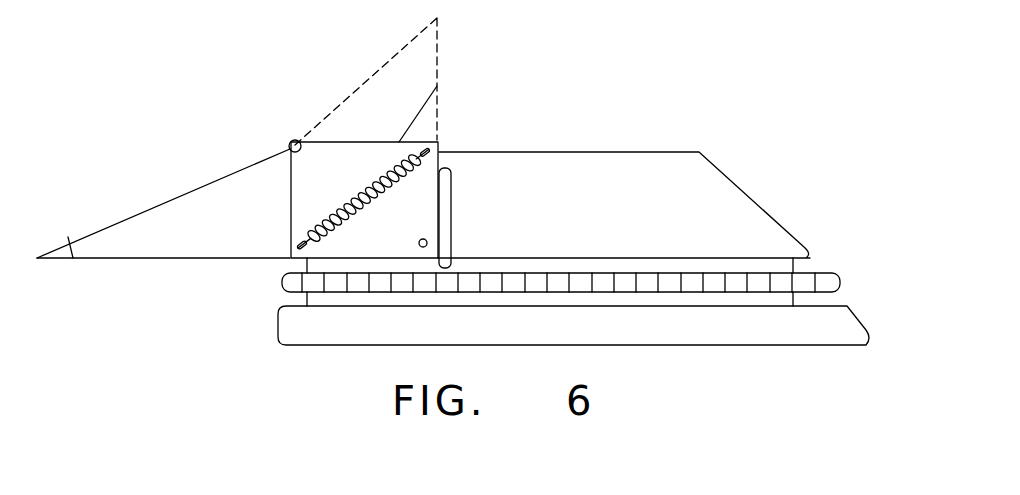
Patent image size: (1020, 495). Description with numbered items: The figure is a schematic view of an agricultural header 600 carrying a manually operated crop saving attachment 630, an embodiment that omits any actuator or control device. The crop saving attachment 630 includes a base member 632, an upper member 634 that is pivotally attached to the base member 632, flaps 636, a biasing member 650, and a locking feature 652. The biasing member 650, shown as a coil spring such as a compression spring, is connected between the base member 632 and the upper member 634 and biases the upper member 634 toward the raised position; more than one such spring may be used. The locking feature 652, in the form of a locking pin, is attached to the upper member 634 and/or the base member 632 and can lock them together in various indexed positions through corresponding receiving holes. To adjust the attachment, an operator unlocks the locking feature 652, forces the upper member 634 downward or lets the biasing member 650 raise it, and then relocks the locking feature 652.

The agricultural header 600 is at (766, 185).
The crop saving attachment 630 is at (368, 60).
The base member 632 is at (360, 258).
The upper member 634 is at (437, 88).
The flaps 636 is at (452, 191).
The biasing member 650 is at (350, 197).
The locking feature 652 is at (427, 243).